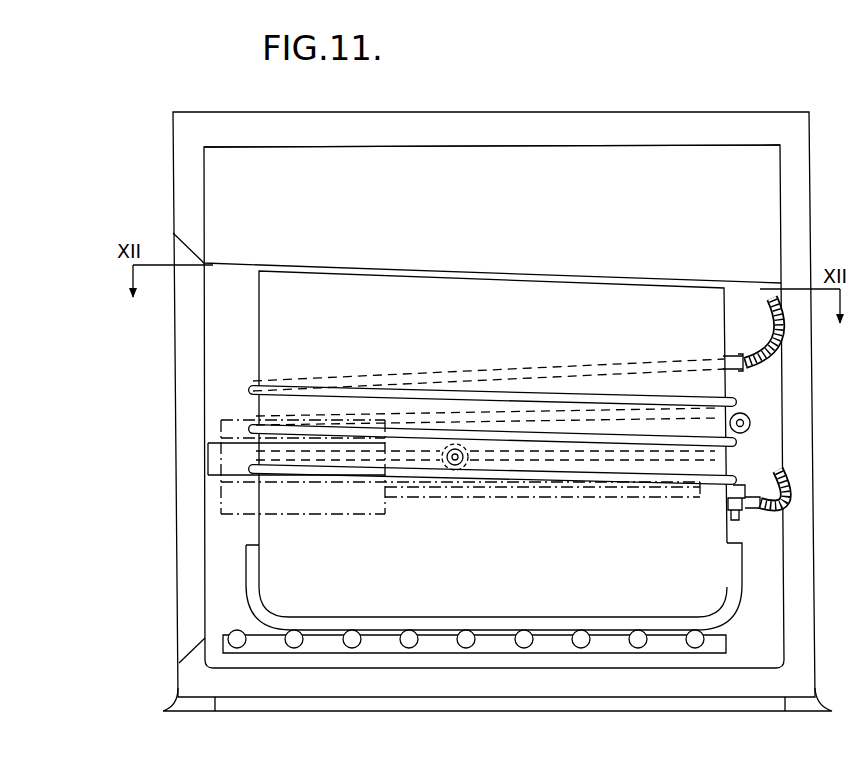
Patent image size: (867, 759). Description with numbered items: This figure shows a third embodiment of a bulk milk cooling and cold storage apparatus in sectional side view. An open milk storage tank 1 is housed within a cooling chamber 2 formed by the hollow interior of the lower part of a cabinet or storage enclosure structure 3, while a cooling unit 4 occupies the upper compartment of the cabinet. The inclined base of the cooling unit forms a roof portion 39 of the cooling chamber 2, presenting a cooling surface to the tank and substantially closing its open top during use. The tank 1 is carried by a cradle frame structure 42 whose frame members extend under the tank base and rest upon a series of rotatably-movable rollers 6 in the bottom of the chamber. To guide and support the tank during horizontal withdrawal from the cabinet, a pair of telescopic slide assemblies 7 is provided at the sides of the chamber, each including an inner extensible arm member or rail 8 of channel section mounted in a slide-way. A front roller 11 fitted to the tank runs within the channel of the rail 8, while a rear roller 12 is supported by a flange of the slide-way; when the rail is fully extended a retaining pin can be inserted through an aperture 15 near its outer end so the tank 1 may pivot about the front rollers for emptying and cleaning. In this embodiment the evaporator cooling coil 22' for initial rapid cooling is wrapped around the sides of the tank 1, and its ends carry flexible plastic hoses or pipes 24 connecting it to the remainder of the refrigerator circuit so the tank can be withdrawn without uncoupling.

The milk storage tank 1 is at (284, 343).
The cooling chamber 2 is at (210, 408).
The cabinet or storage enclosure structure 3 is at (186, 143).
The cooling unit 4 is at (423, 162).
The rollers 6 is at (464, 648).
The telescopic slide assemblies 7 is at (495, 484).
The extensible arm member or rail 8 is at (222, 462).
The front roller 11 is at (452, 469).
The rear roller 12 is at (748, 427).
The aperture 15 is at (740, 512).
The evaporator cooling coil 22' is at (492, 411).
The flexible plastic hoses or pipes 24 is at (778, 338).
The roof portion 39 is at (227, 271).
The cradle frame structure 42 is at (257, 583).